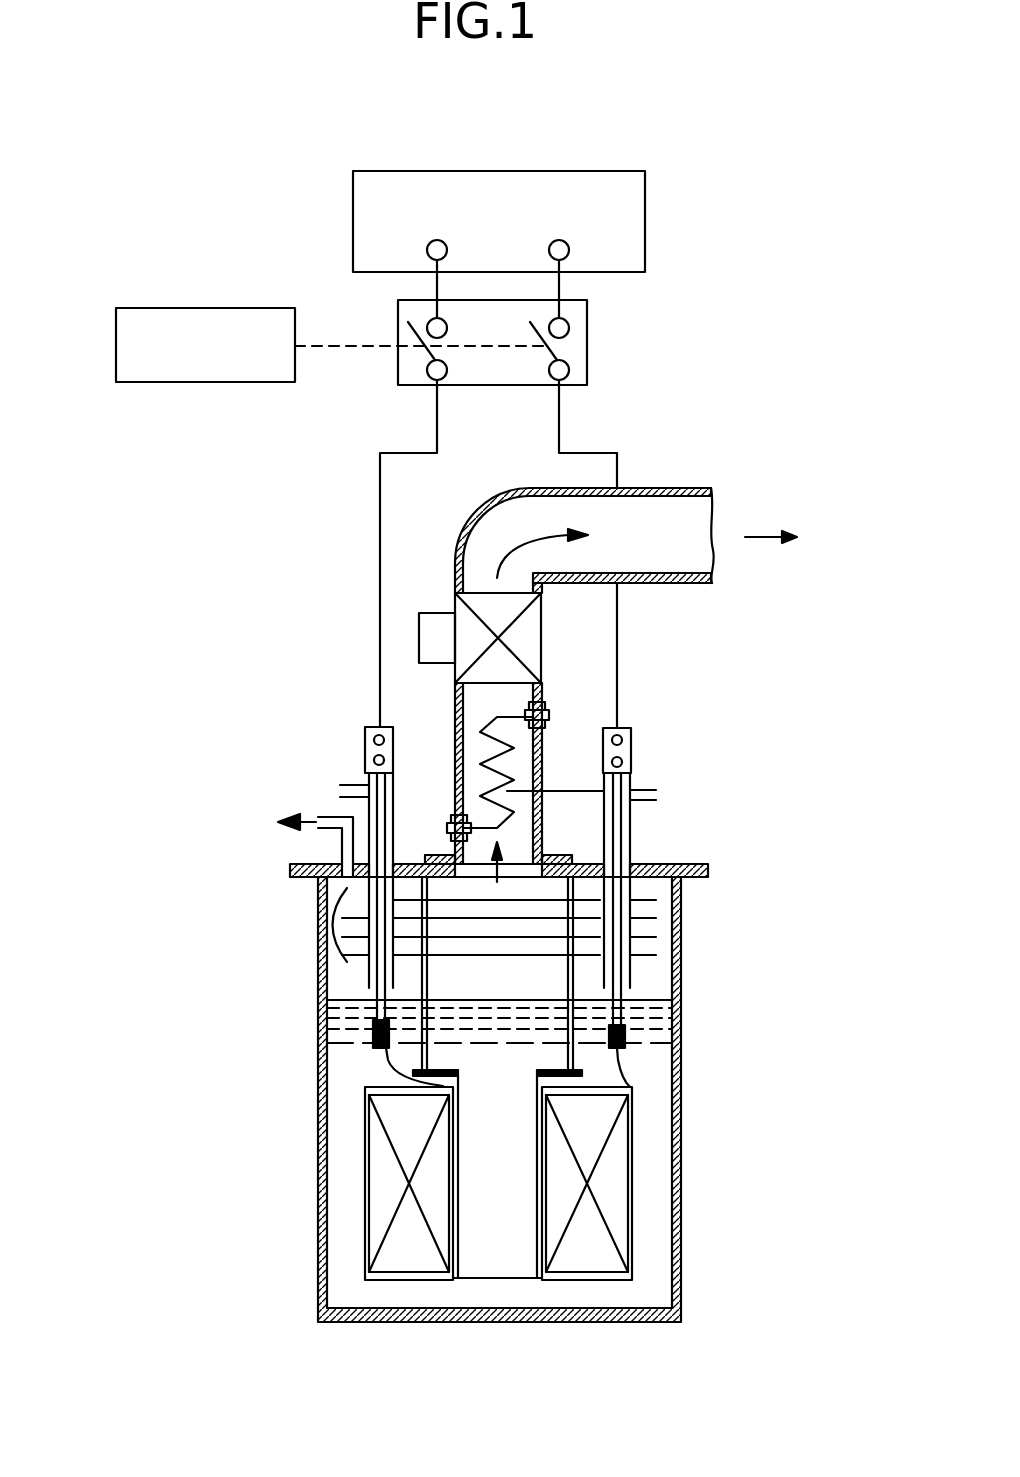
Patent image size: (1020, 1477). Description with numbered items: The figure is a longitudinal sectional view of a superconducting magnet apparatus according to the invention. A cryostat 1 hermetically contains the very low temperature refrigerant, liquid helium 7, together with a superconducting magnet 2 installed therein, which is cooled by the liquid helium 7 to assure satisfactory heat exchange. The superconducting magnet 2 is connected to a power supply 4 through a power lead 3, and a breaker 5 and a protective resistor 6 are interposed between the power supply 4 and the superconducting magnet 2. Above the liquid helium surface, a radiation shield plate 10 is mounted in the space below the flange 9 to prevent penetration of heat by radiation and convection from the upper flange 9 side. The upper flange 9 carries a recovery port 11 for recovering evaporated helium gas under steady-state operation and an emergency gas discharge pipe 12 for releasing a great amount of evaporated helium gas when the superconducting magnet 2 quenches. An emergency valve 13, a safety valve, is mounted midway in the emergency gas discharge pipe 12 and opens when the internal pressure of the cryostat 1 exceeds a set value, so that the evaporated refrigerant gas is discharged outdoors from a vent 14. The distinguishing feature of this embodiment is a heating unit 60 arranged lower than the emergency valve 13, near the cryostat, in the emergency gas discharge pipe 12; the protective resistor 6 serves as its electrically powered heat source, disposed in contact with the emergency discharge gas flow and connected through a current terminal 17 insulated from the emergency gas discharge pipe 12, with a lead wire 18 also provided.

The cryostat 1 is at (680, 1118).
The superconducting magnet 2 is at (615, 1195).
The power lead 3 is at (623, 837).
The power supply 4 is at (645, 222).
The breaker 5 is at (205, 308).
The protective resistor 6 is at (462, 748).
The liquid helium 7 is at (648, 1063).
The flange 9 is at (300, 865).
The radiation shield plate 10 is at (323, 914).
The recovery port 11 is at (313, 817).
The emergency gas discharge pipe 12 is at (592, 583).
The emergency valve 13 is at (437, 643).
The vent 14 is at (692, 547).
The current terminal 17 is at (548, 706).
The lead wire 18 is at (447, 826).
The heating unit 60 is at (630, 780).